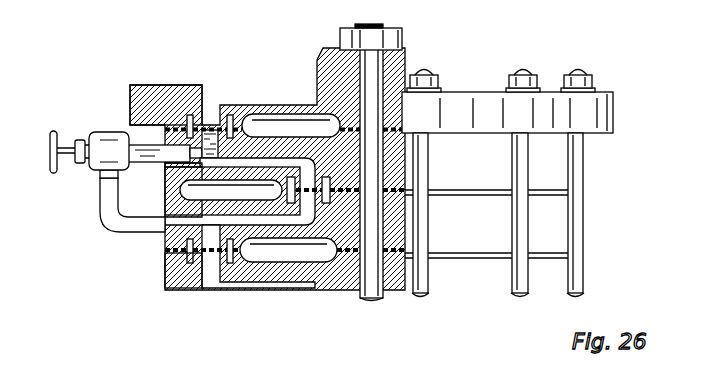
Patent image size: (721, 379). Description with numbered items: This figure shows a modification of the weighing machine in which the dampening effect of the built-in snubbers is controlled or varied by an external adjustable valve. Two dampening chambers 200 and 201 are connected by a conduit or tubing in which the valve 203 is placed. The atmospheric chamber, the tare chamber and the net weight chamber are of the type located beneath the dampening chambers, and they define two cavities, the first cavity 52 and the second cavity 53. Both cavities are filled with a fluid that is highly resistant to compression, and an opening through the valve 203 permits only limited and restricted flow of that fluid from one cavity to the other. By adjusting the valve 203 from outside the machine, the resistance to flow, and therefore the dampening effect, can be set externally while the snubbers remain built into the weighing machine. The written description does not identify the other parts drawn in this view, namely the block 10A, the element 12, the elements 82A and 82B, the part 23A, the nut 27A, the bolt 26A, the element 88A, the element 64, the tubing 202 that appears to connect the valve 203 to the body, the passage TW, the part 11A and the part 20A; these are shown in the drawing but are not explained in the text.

The mounting block 10A is at (136, 86).
The upper piston rod 12 is at (207, 127).
The upper piston 82A is at (231, 113).
The lower piston 82B is at (185, 272).
The cylinder housing 23A is at (320, 47).
The nut 27A is at (402, 44).
The tie bolt 26A is at (372, 68).
The middle piston 88A is at (322, 208).
The cavity 52 is at (165, 176).
The cavity 53 is at (165, 248).
The lower body block 64 is at (165, 254).
The fluid pipe 202 is at (100, 223).
The valve 203 is at (97, 176).
The fluid channel TW is at (225, 286).
The dampening chamber 200 is at (547, 175).
The tie rod 11A is at (585, 194).
The dampening chamber 201 is at (550, 228).
The rod feet 20A is at (540, 283).